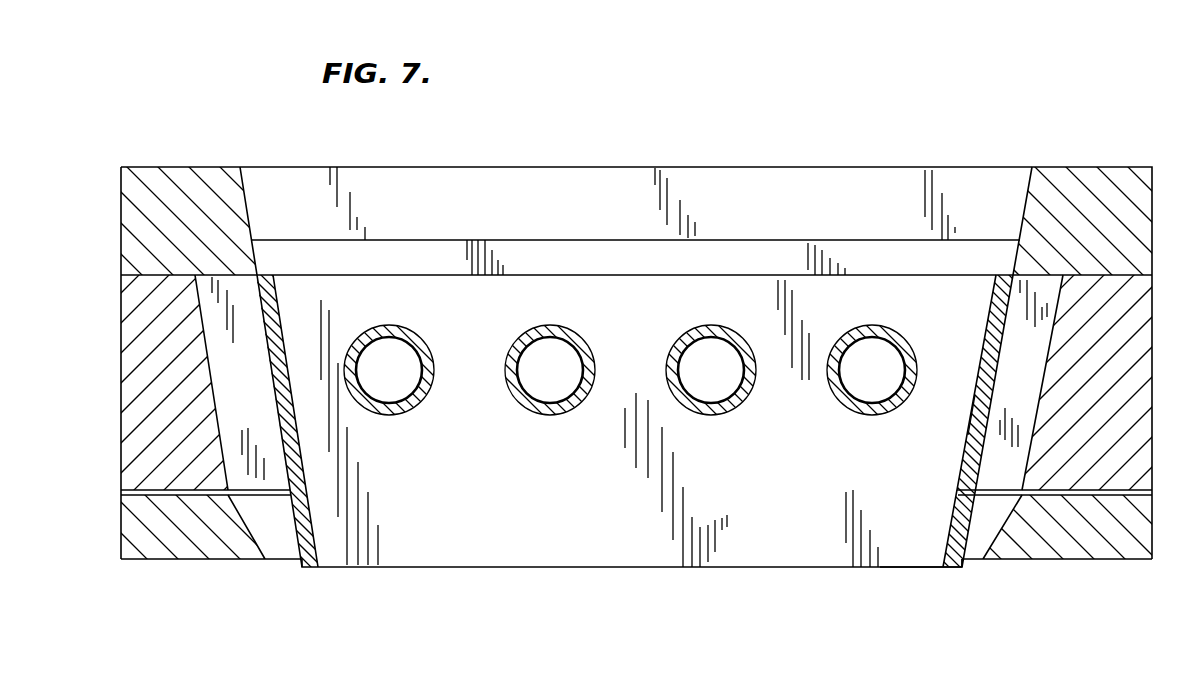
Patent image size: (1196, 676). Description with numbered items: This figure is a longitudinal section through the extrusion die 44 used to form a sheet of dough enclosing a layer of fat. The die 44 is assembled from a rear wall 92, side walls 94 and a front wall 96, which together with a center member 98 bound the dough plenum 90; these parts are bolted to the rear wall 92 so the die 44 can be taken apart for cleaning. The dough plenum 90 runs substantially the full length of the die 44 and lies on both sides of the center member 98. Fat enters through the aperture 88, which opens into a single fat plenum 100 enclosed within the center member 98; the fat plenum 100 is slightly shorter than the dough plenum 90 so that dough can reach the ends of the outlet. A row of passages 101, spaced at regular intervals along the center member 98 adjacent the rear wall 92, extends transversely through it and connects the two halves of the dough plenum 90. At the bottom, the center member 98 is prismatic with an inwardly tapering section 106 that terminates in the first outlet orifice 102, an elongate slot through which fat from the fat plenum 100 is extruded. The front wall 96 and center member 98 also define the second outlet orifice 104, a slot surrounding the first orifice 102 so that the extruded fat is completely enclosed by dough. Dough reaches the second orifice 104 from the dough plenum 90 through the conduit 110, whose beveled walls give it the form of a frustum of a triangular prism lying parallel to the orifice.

The die 44 is at (106, 268).
The aperture 88 is at (598, 211).
The dough plenum 90 is at (250, 403).
The rear wall 92 is at (172, 190).
The side walls 94 is at (128, 375).
The front wall 96 is at (223, 542).
The center member 98 is at (988, 370).
The fat plenum 100 is at (652, 510).
The passages 101 is at (404, 382).
The first outlet orifice 102 is at (913, 557).
The second outlet orifice 104 is at (978, 550).
The inwardly tapering section 106 is at (958, 483).
The conduit 110 is at (285, 527).